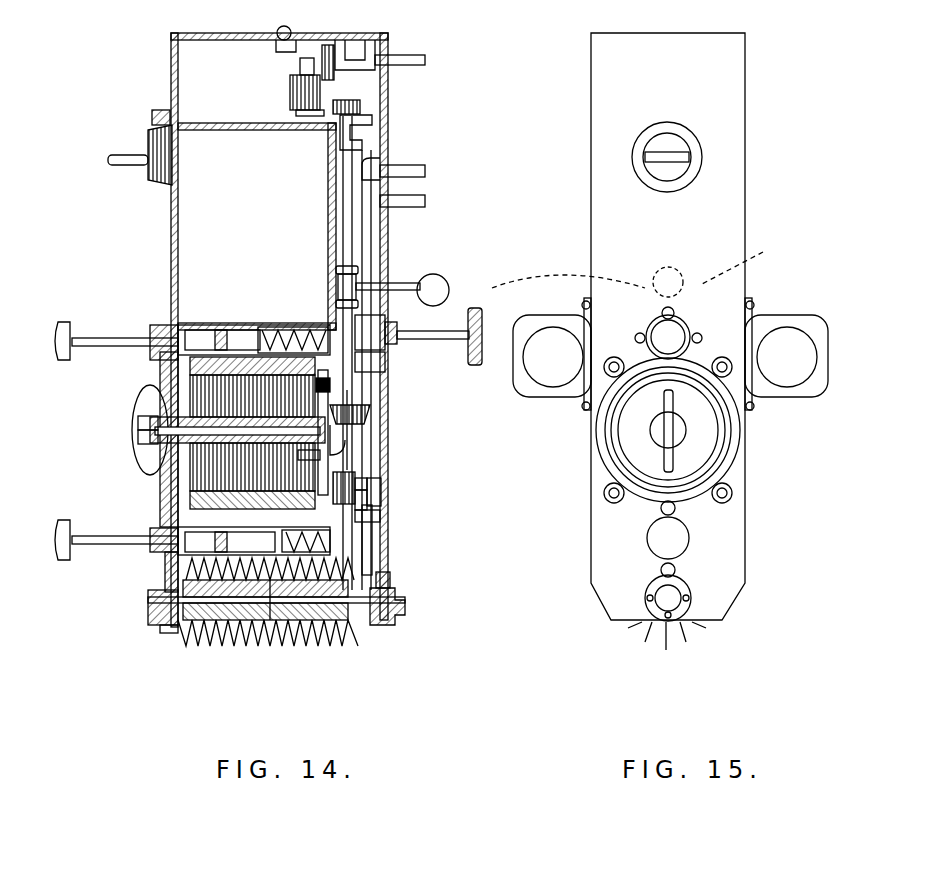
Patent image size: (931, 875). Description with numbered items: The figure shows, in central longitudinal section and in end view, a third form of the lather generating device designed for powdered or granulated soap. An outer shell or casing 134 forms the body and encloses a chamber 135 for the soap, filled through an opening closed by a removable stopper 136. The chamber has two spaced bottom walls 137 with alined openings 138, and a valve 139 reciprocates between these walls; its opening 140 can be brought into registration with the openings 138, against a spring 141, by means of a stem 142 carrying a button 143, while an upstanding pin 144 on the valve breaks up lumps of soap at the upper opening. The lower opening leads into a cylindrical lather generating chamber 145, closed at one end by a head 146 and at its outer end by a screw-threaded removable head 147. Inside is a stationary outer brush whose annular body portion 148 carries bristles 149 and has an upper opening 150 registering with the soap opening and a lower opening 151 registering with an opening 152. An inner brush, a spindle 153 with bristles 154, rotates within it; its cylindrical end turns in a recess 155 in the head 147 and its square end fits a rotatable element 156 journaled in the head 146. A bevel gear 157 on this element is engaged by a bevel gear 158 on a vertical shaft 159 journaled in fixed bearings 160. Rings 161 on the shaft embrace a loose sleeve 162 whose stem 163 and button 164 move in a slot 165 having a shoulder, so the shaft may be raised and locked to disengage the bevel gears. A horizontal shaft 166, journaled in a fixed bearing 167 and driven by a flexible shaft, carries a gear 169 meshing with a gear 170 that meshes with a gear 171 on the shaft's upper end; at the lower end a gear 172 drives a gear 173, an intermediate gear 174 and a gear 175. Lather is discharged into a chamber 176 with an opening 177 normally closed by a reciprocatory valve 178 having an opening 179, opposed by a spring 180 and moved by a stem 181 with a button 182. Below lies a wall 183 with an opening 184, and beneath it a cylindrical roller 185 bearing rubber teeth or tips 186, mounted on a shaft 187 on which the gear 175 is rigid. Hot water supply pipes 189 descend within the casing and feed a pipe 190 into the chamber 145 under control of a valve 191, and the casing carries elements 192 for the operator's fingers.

In FIG. 14, the outer shell or casing 134 is at (172, 250).
In FIG. 15, the outer shell or casing 134 is at (738, 196).
In FIG. 14, the chamber 135 is at (257, 226).
In FIG. 14, the removable stopper 136 is at (136, 165).
In FIG. 15, the removable stopper 136 is at (642, 164).
In FIG. 14, the spaced bottom walls 137 is at (262, 325).
In FIG. 14, the alined openings 138 is at (245, 325).
In FIG. 14, the valve 139 is at (178, 358).
In FIG. 14, the opening 140 is at (170, 325).
In FIG. 14, the spring 141 is at (296, 330).
In FIG. 14, the stem 142 is at (88, 337).
In FIG. 14, the button 143 is at (68, 360).
In FIG. 15, the button 143 is at (692, 333).
In FIG. 14, the upstanding pin 144 is at (218, 338).
In FIG. 14, the cylindrical lather generating chamber 145 is at (356, 462).
In FIG. 14, the head 146 is at (367, 484).
In FIG. 14, the removable head 147 is at (175, 488).
In FIG. 15, the removable head 147 is at (712, 455).
In FIG. 14, the annular body portion 148 is at (388, 375).
In FIG. 14, the bristles 149 is at (165, 475).
In FIG. 14, the upper opening 150 is at (160, 385).
In FIG. 14, the lower opening 151 is at (162, 510).
In FIG. 14, the opening 152 is at (160, 522).
In FIG. 14, the spindle 153 is at (165, 430).
In FIG. 14, the bristles 154 is at (140, 436).
In FIG. 14, the recess 155 is at (138, 423).
In FIG. 14, the rotatable element 156 is at (328, 440).
In FIG. 14, the bevel gear 157 is at (335, 420).
In FIG. 14, the bevel gear 158 is at (372, 435).
In FIG. 14, the vertical shaft 159 is at (372, 412).
In FIG. 14, the fixed bearings 160 is at (370, 130).
In FIG. 14, the rings 161 is at (338, 270).
In FIG. 14, the sleeve 162 is at (338, 287).
In FIG. 14, the stem 163 is at (392, 300).
In FIG. 14, the button 164 is at (447, 289).
In FIG. 14, the slot 165 is at (392, 282).
In FIG. 15, the slot 165 is at (648, 266).
In FIG. 14, the horizontal shaft 166 is at (425, 60).
In FIG. 14, the fixed bearing 167 is at (288, 50).
In FIG. 14, the gear 169 is at (338, 75).
In FIG. 14, the gear 170 is at (290, 95).
In FIG. 14, the gear 171 is at (365, 107).
In FIG. 14, the gear 172 is at (381, 512).
In FIG. 14, the gear 173 is at (381, 485).
In FIG. 14, the intermediate gear 174 is at (388, 585).
In FIG. 14, the gear 175 is at (400, 620).
In FIG. 14, the chamber 176 is at (298, 535).
In FIG. 14, the opening 177 is at (262, 535).
In FIG. 14, the reciprocatory valve 178 is at (170, 560).
In FIG. 14, the opening 179 is at (220, 535).
In FIG. 14, the spring 180 is at (375, 548).
In FIG. 14, the stem 181 is at (140, 546).
In FIG. 14, the button 182 is at (70, 562).
In FIG. 15, the button 182 is at (690, 538).
In FIG. 14, the wall 183 is at (165, 592).
In FIG. 14, the opening 184 is at (268, 640).
In FIG. 14, the cylindrical roller 185 is at (322, 645).
In FIG. 14, the teeth or tips 186 is at (230, 640).
In FIG. 15, the teeth or tips 186 is at (668, 650).
In FIG. 14, the shaft 187 is at (170, 628).
In FIG. 14, the hot water supply pipes 189 is at (420, 198).
In FIG. 14, the pipe 190 is at (388, 350).
In FIG. 14, the valve 191 is at (483, 320).
In FIG. 15, the elements 192 is at (670, 356).